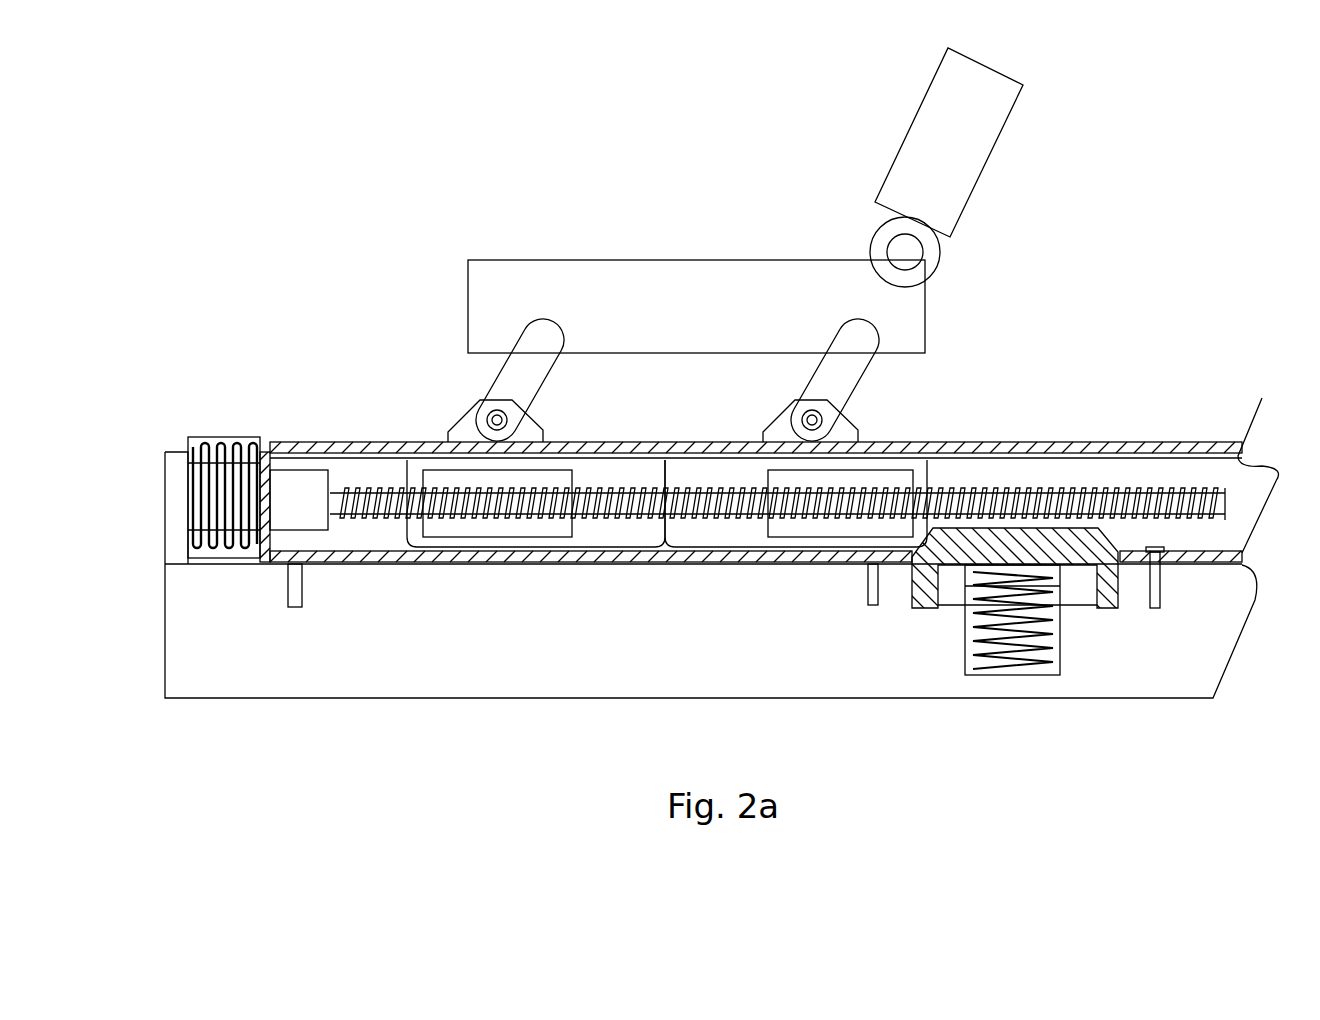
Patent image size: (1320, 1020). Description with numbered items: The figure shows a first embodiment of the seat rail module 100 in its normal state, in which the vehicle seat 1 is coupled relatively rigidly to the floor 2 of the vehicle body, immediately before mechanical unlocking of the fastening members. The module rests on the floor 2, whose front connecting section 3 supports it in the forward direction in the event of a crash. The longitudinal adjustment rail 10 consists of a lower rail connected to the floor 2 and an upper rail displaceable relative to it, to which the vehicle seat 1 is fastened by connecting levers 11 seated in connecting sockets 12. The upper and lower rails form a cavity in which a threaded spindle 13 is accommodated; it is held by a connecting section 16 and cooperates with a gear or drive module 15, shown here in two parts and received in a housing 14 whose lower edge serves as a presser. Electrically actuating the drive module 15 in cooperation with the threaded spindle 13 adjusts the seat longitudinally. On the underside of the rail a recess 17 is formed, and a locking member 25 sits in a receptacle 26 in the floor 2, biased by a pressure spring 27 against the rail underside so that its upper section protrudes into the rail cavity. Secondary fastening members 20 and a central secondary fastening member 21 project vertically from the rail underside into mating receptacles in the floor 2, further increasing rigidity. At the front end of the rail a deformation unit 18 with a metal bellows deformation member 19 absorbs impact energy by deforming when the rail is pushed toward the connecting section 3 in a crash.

The seat rail module 100 is at (190, 70).
The vehicle seat 1 is at (660, 277).
The floor of vehicle body 2 is at (660, 685).
The connecting section at front end of floor 3 is at (175, 508).
The longitudinal adjustment rail 10 is at (1183, 447).
The connecting lever 11 is at (843, 375).
The connecting socket 12 is at (848, 428).
The threaded spindle 13 is at (1085, 490).
The housing/presser 14 is at (607, 535).
The gear or drive module 15 is at (467, 525).
The connecting section for spindle 16 is at (297, 487).
The recess 17 is at (1118, 557).
The deformation unit 18 is at (223, 437).
The deformation member 19 is at (218, 493).
The secondary fastening member 20 is at (292, 600).
The central secondary fastening member 21 is at (870, 593).
The locking member 25 is at (1003, 540).
The receptacle in floor of vehicle body 26 is at (1060, 630).
The pressure spring 27 is at (965, 630).